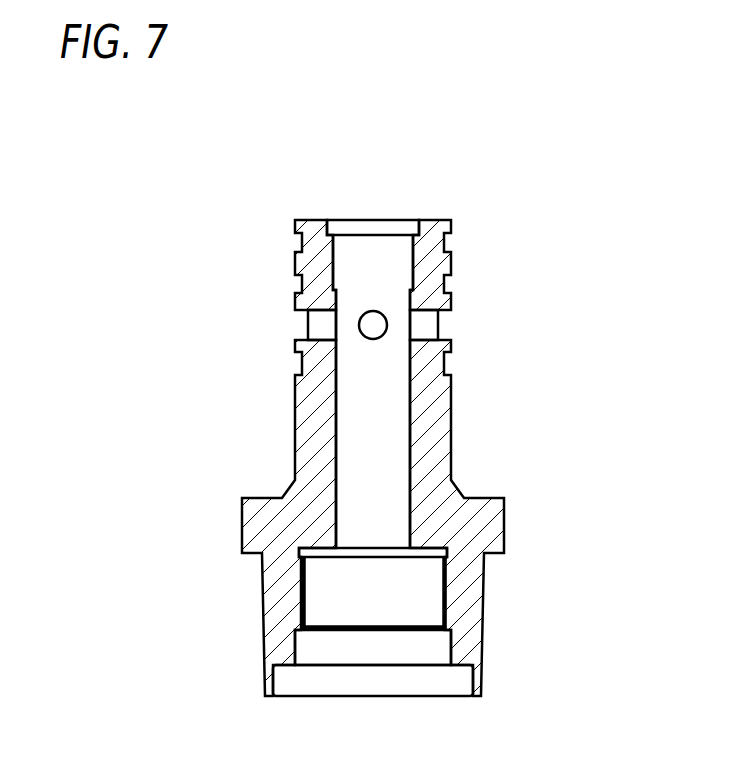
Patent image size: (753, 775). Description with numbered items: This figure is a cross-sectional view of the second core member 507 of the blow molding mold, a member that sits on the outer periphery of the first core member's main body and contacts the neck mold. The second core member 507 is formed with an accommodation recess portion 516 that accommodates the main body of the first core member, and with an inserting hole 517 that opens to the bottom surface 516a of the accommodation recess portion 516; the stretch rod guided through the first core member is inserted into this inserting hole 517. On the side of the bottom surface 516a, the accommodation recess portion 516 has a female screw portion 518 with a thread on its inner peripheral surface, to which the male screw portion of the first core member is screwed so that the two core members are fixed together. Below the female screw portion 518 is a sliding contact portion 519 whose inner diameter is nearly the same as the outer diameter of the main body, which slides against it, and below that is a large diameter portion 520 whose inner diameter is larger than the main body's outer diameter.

The second core member 507 is at (578, 152).
The inserting hole 517 is at (397, 430).
The bottom surface 516a is at (427, 552).
The accommodation recess portion 516 is at (578, 617).
The female screw portion 518 is at (428, 607).
The sliding contact portion 519 is at (427, 646).
The large diameter portion 520 is at (437, 682).